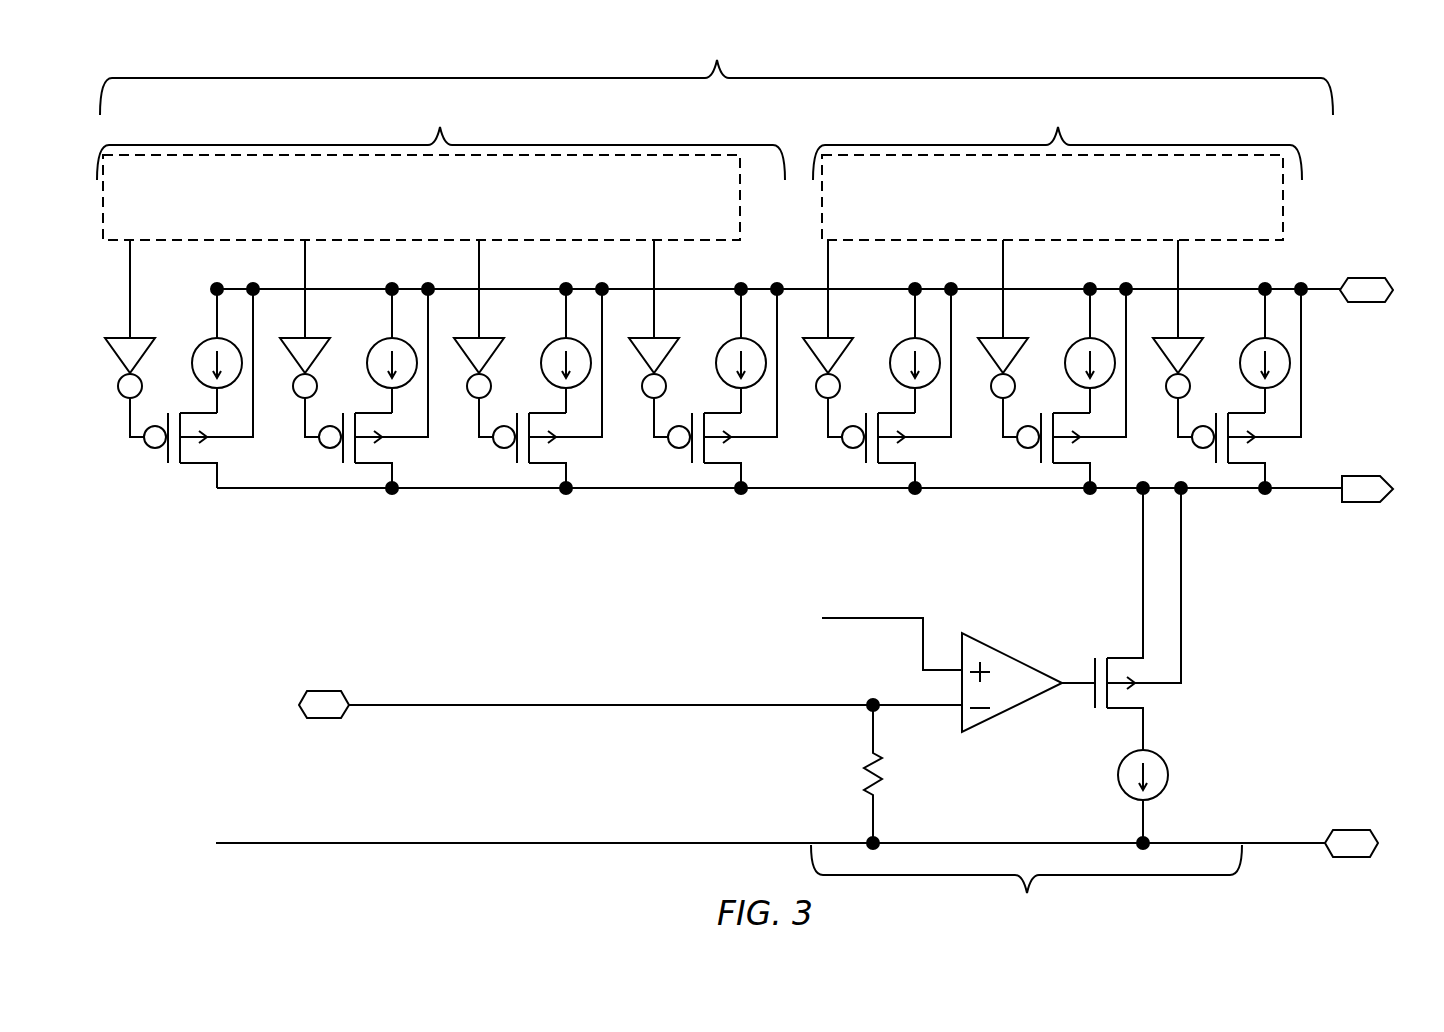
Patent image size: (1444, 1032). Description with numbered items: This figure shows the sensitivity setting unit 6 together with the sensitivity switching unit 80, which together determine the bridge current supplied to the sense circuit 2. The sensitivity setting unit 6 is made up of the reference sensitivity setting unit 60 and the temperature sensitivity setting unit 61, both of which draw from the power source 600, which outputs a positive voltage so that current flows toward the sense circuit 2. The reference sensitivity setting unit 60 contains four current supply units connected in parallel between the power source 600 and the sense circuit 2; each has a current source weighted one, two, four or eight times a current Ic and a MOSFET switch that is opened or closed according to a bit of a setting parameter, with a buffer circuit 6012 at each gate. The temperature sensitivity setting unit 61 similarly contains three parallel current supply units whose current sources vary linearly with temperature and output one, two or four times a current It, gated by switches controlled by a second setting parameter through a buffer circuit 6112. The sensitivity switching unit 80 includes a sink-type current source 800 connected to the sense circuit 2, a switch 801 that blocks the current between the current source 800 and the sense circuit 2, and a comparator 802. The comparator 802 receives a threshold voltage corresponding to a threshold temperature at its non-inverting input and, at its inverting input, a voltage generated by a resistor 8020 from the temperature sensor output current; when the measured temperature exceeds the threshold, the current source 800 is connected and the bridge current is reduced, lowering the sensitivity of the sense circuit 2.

The sensitivity setting unit 6 is at (716, 67).
The reference sensitivity setting unit 60 is at (441, 162).
The temperature sensitivity setting unit 61 is at (1057, 162).
The power source 600 is at (1355, 305).
The sense circuit 2 is at (1365, 505).
The buffer circuit 6012 is at (124, 398).
The buffer circuit 6112 is at (822, 398).
The sensitivity switching unit 80 is at (838, 709).
The current source 800 is at (1168, 788).
The switch 801 is at (1110, 658).
The comparator 802 is at (990, 720).
The resistor 8020 is at (885, 794).